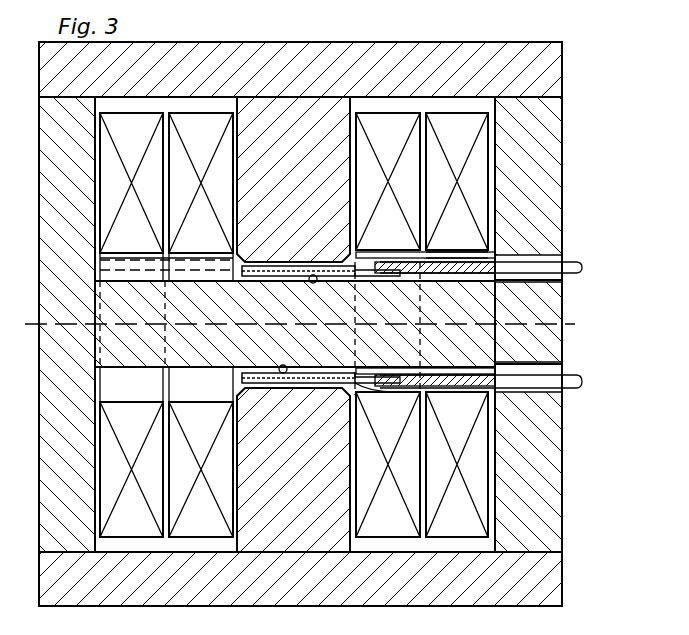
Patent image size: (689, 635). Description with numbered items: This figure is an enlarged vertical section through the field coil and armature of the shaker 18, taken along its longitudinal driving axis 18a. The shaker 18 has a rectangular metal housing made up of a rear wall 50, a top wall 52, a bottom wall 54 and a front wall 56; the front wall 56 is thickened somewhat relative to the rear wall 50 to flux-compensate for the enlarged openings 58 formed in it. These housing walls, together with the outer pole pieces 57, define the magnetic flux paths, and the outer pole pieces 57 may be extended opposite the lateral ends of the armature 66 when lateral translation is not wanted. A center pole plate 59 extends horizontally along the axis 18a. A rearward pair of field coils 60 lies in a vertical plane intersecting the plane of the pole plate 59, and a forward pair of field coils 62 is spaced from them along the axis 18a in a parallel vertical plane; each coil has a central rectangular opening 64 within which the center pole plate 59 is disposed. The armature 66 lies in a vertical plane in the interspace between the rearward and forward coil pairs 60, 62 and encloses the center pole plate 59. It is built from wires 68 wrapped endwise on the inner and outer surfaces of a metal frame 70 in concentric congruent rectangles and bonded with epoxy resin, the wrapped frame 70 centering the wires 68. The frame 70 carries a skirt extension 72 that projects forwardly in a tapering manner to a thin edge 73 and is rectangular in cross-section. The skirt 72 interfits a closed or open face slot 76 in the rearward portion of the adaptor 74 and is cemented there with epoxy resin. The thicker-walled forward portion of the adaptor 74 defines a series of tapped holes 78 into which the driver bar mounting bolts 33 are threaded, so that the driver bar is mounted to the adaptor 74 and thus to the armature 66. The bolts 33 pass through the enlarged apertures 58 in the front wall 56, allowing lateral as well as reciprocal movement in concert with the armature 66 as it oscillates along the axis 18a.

The shaker 18 is at (568, 38).
The longitudinal axis 18a is at (84, 322).
The driver bar mounting bolt 33 is at (575, 260).
The rear wall 50 is at (48, 232).
The top wall 52 is at (222, 45).
The bottom wall 54 is at (298, 600).
The front wall 56 is at (557, 205).
The outer pole piece 57 is at (303, 105).
The opening 58 is at (565, 282).
The center pole plate 59 is at (115, 350).
The rearward pair of field coils 60 is at (185, 542).
The forward pair of field coils 62 is at (410, 540).
The central rectangular opening 64 is at (138, 393).
The armature 66 is at (275, 263).
The wire 68 is at (320, 265).
The metal frame 70 is at (232, 271).
The skirt extension 72 is at (377, 258).
The thin edge 73 is at (380, 394).
The adaptor 74 is at (412, 275).
The face slot 76 is at (395, 367).
The tapped hole 78 is at (468, 253).